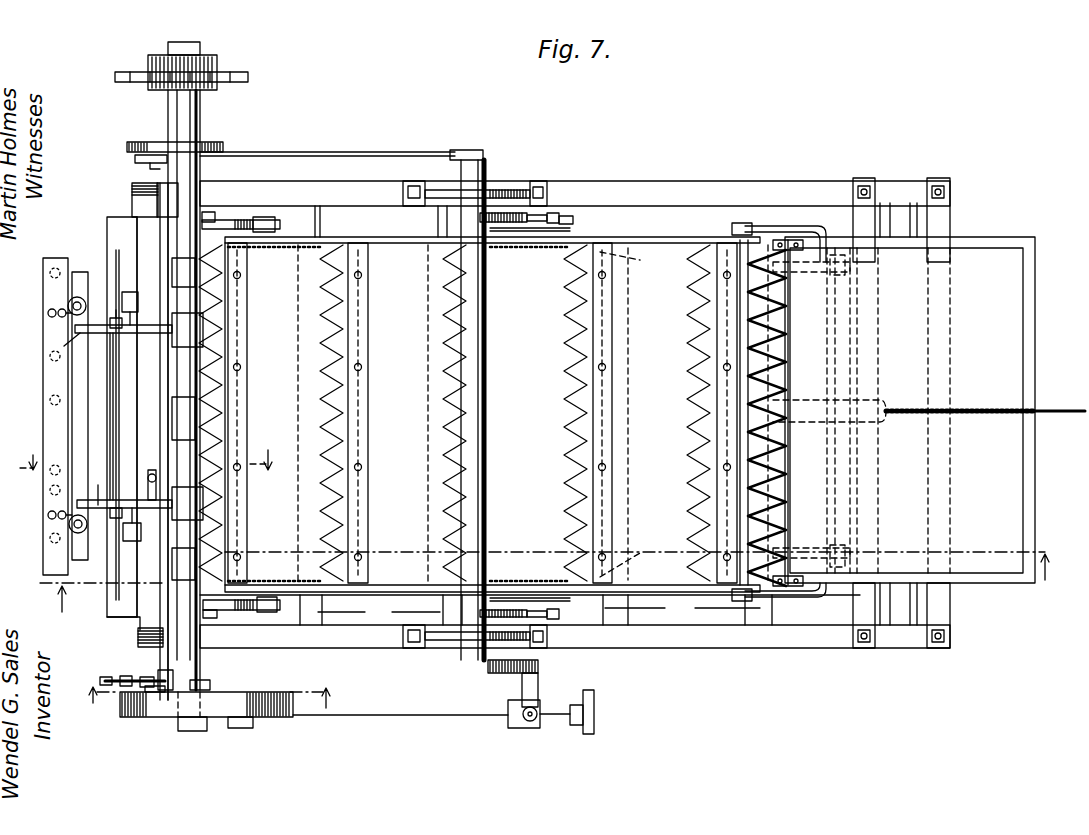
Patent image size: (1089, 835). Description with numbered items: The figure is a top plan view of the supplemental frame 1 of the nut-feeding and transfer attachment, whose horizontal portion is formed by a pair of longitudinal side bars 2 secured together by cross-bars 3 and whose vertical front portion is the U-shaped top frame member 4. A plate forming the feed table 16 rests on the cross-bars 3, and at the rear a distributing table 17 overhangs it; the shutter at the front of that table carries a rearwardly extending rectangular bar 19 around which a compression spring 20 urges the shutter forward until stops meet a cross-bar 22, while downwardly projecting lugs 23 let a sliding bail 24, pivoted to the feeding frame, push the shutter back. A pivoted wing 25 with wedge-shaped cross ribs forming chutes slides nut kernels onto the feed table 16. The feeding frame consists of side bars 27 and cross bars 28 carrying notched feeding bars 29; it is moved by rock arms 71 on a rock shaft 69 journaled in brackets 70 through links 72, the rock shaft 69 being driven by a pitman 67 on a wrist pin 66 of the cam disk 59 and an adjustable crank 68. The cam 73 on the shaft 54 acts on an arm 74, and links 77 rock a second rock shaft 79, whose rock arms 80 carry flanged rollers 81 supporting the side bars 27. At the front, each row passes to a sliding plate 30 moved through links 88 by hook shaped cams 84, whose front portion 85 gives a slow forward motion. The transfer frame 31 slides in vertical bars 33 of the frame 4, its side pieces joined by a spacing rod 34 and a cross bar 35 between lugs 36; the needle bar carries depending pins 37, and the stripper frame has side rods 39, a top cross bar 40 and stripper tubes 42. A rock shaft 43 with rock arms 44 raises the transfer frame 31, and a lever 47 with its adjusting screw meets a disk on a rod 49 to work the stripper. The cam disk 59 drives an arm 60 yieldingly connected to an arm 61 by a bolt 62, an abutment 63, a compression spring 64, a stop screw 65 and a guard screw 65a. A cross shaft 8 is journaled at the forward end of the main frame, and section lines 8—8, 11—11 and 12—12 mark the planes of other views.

The supplemental frame 1 is at (133, 186).
The longitudinal side bars 2 is at (738, 181).
The cross-bars 3 is at (539, 610).
The U-shaped top frame member 4 is at (107, 245).
The cross shaft 8 is at (551, 582).
The section line 11- 11 is at (209, 693).
The section line 12- 12 is at (150, 457).
The feed table 16 is at (573, 414).
The distributing table 17 is at (983, 248).
The rectangular bar 19 is at (882, 400).
The compression spring 20 is at (985, 400).
The cross-bar 22 is at (880, 205).
The lugs 23 is at (845, 270).
The sliding bail 24 is at (818, 225).
The pivoted wing 25 is at (745, 429).
The side bars 27 is at (400, 585).
The cross bars 28 is at (243, 421).
The feeding bars 29 is at (217, 458).
The sliding plate 30 is at (118, 597).
The transfer frame 31 is at (124, 323).
The vertical bars 33 is at (130, 292).
The spacing rod 34 is at (120, 404).
The cross bar 35 is at (44, 379).
The lugs 36 is at (48, 313).
The depending pins 37 is at (56, 460).
The side rods 39 is at (84, 300).
The top cross bar 40 is at (84, 442).
The cylindrical stripper tubes 42 is at (58, 410).
The rock shaft 43 is at (185, 358).
The rock arms 44 is at (112, 340).
The rearwardly projecting arm or lever 47 is at (138, 462).
The rod 49 is at (64, 340).
The shaft 54 is at (192, 731).
The cam disk 59 is at (250, 692).
The arm 60 is at (210, 685).
The arm 61 is at (118, 678).
The bolt 62 is at (130, 676).
The abutment 63 is at (164, 672).
The compression spring 64 is at (158, 692).
The stop screw 65 is at (118, 687).
The guard screw 65a is at (147, 677).
The wrist pin 66 is at (240, 728).
The pitman 67 is at (423, 714).
The crank 68 is at (508, 673).
The rock shaft 69 is at (490, 162).
The brackets 70 is at (510, 190).
The rock arms 71 is at (547, 213).
The links 72 is at (512, 234).
The cam 73 is at (216, 143).
The arm 74 is at (154, 163).
The links 77 is at (341, 151).
The second rock shaft 79 is at (478, 150).
The rock arms 80 is at (232, 245).
The flanged rollers 81 is at (629, 412).
The hook shaped cams 84 is at (240, 220).
The front portion 85 is at (210, 212).
The links 88 is at (132, 202).